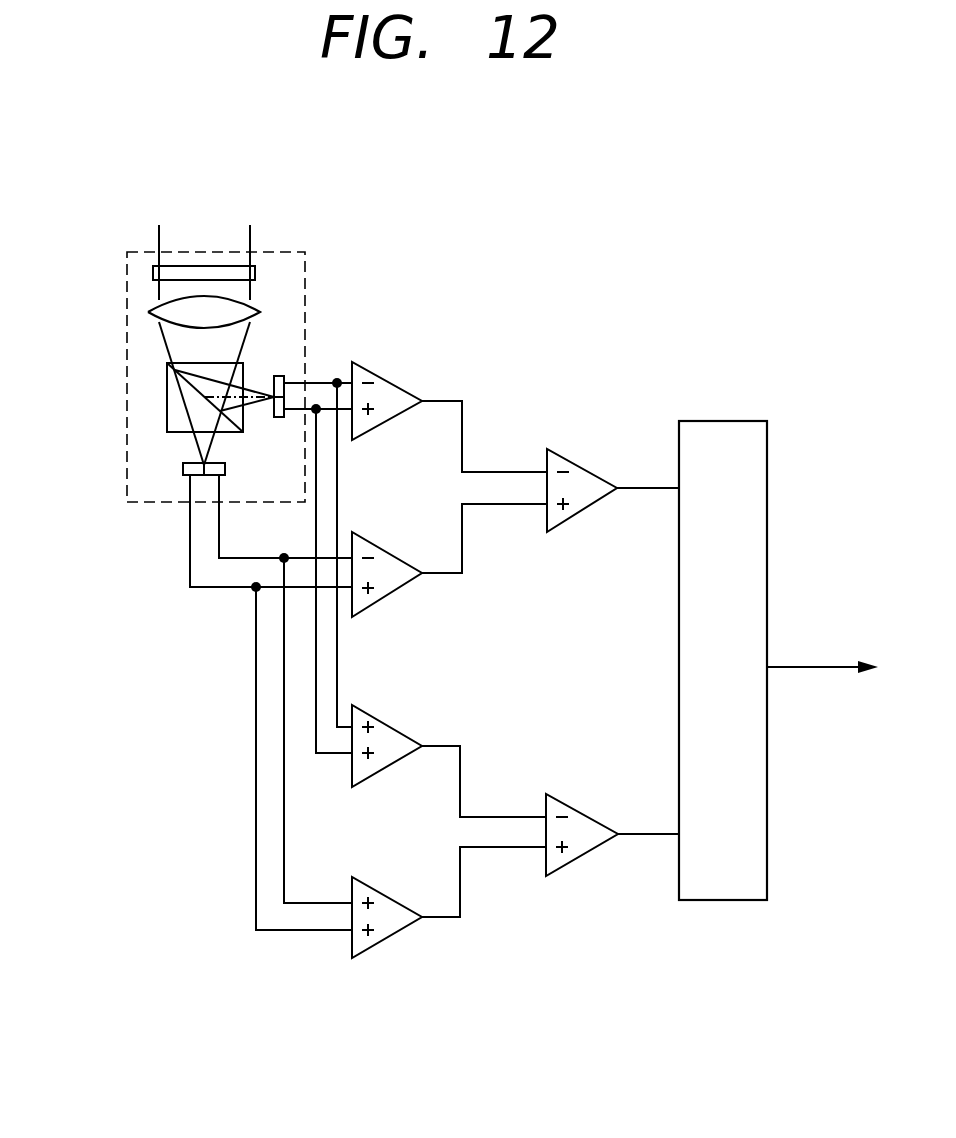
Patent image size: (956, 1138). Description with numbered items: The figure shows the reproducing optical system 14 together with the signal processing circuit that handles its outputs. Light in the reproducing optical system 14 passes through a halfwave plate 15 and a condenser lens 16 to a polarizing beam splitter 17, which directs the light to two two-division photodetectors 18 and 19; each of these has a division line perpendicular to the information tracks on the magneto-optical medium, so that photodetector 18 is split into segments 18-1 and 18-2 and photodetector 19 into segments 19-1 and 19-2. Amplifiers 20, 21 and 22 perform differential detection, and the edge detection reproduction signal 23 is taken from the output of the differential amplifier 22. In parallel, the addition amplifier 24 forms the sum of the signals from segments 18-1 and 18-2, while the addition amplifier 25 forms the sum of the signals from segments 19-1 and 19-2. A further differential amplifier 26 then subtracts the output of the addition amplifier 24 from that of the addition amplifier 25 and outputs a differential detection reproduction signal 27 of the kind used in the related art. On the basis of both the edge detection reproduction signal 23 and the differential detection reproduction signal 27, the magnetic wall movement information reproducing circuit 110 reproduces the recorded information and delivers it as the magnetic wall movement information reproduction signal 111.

The reproducing optical system 14 is at (127, 352).
The halfwave plate 15 is at (153, 272).
The condenser lens 16 is at (148, 312).
The polarizing beam splitter 17 is at (167, 413).
The two-division photodetector 18 is at (343, 403).
The photodetector segment 18-1 is at (278, 378).
The photodetector segment 18-2 is at (285, 402).
The two-division photodetector 19 is at (175, 507).
The photodetector segment 19-1 is at (183, 467).
The photodetector segment 19-2 is at (220, 477).
The differential amplifier 20 is at (412, 392).
The differential amplifier 21 is at (393, 606).
The differential amplifier 22 is at (581, 465).
The edge detection reproduction signal 23 is at (647, 483).
The addition amplifier 24 is at (408, 738).
The addition amplifier 25 is at (405, 904).
The differential amplifier 26 is at (582, 812).
The differential detection reproduction signal 27 is at (647, 830).
The magnetic wall movement information reproducing circuit 110 is at (755, 420).
The magnetic wall movement information reproduction signal 111 is at (813, 665).